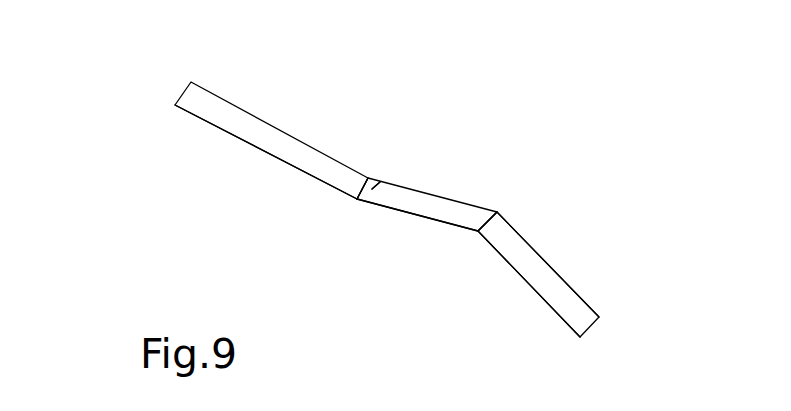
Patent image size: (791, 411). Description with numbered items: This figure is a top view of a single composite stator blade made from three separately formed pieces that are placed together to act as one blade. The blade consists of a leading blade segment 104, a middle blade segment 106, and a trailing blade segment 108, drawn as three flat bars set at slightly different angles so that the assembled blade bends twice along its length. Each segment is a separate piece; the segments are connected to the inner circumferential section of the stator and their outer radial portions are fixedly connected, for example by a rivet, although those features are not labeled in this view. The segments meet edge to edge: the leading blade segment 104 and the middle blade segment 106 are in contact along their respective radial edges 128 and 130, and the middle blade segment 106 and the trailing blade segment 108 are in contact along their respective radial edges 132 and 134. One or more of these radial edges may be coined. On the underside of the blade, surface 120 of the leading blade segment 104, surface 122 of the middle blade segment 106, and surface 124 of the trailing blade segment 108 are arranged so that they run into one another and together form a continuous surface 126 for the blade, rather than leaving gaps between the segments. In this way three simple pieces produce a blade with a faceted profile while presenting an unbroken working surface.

The leading blade segment 104 is at (552, 254).
The middle blade segment 106 is at (432, 185).
The trailing blade segment 108 is at (237, 99).
The surface of leading blade segment 120 is at (534, 290).
The surface of middle blade segment 122 is at (408, 213).
The surface of trailing blade segment 124 is at (220, 131).
The continuous surface 126 is at (349, 271).
The radial edge of leading blade segment 128 is at (503, 220).
The radial edge of middle blade segment 130 is at (478, 229).
The radial edge of middle blade segment 132 is at (375, 182).
The radial edge of trailing blade segment 134 is at (357, 199).